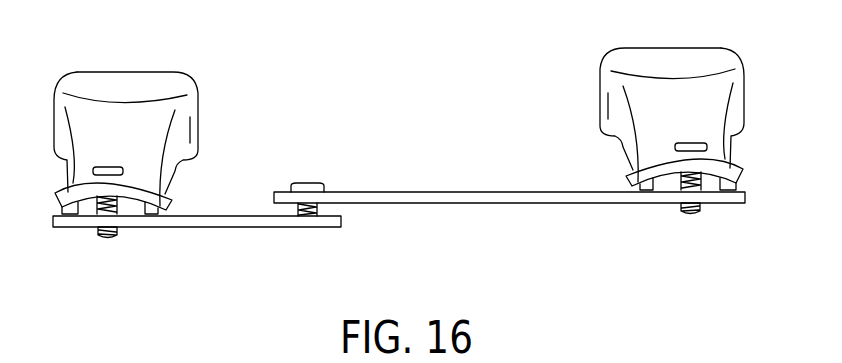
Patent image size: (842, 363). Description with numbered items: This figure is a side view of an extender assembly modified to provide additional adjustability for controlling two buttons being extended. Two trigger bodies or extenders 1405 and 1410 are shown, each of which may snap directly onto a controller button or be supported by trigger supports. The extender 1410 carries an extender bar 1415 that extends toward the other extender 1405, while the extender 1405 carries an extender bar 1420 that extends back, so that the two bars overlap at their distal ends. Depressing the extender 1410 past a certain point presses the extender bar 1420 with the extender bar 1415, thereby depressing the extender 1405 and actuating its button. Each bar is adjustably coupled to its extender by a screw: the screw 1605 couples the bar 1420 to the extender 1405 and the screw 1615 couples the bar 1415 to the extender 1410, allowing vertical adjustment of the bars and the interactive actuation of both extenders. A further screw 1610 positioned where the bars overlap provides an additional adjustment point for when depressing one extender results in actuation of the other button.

The extender 1405 is at (122, 80).
The extender 1410 is at (677, 60).
The extender bar 1415 is at (529, 204).
The extender bar 1420 is at (203, 228).
The screw 1605 is at (110, 167).
The screw 1610 is at (308, 182).
The screw 1615 is at (691, 143).